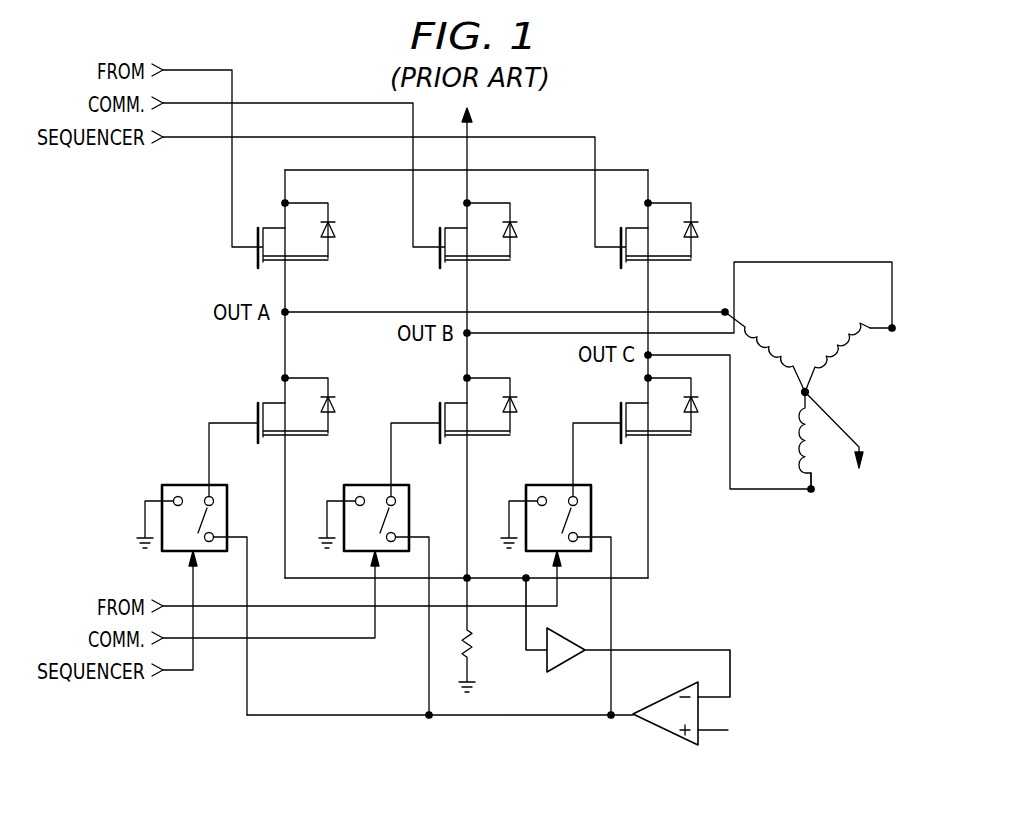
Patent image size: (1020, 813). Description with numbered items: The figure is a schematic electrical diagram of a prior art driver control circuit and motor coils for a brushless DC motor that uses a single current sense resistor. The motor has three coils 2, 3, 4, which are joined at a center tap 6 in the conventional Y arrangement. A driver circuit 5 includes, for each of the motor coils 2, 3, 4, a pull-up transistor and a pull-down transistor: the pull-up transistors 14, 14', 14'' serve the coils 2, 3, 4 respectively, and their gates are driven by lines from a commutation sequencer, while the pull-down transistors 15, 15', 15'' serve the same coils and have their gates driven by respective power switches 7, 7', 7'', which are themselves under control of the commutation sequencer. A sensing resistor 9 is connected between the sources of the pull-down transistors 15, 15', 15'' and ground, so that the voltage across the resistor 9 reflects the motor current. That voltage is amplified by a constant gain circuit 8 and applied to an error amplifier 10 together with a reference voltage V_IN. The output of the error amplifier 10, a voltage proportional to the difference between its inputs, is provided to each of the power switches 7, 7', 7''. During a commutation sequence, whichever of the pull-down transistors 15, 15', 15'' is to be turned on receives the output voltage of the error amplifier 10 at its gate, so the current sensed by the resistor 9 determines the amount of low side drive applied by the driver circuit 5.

The motor coil 2 is at (753, 323).
The motor coil 3 is at (856, 322).
The motor coil 4 is at (783, 432).
The driver circuit 5 is at (681, 125).
The center tap 6 is at (803, 392).
The power switch 7 is at (192, 575).
The power switch 7' is at (374, 575).
The power switch 7'' is at (556, 575).
The constant gain circuit 8 is at (567, 664).
The sensing resistor 9 is at (468, 648).
The error amplifier 10 is at (668, 733).
The pull-up transistor 14 is at (267, 241).
The pull-up transistor 14' is at (450, 241).
The pull-up transistor 14'' is at (628, 241).
The pull-down transistor 15 is at (267, 437).
The pull-down transistor 15' is at (450, 437).
The pull-down transistor 15'' is at (628, 437).